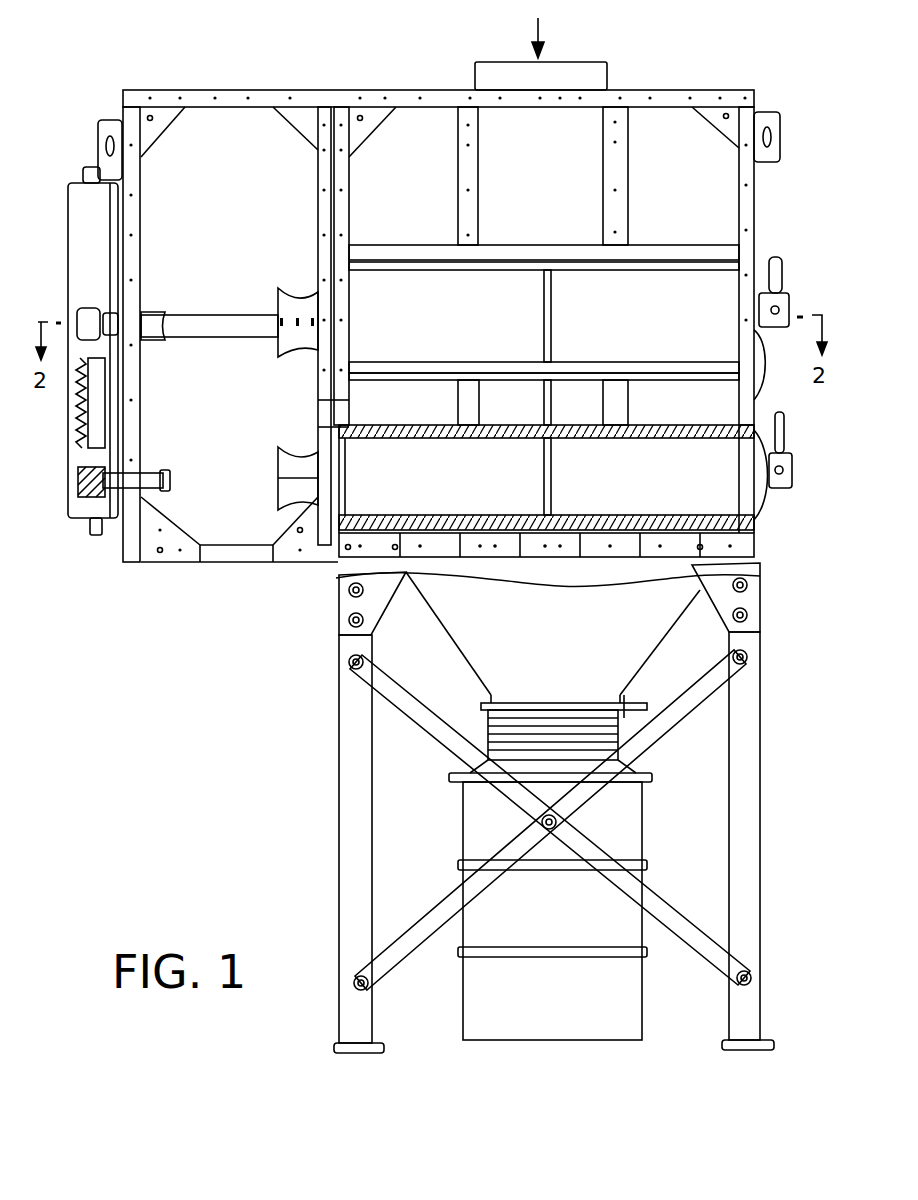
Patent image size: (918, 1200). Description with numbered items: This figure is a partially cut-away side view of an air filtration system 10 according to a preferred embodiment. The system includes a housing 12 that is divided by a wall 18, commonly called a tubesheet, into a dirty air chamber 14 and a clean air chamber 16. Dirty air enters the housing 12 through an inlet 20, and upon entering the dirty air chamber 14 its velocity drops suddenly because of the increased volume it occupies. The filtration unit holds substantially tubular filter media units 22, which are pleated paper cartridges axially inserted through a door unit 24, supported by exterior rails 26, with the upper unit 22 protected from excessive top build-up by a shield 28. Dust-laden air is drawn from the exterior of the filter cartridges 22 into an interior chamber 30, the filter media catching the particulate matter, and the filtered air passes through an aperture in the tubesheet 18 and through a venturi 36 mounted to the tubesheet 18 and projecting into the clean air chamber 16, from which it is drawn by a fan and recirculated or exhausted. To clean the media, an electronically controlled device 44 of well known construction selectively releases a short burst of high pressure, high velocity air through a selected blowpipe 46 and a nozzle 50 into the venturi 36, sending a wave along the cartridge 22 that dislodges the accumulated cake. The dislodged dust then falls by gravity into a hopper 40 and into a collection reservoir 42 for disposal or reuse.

The air filtration system 10 is at (168, 640).
The housing 12 is at (368, 90).
The dirty air chamber 14 is at (415, 150).
The clean air chamber 16 is at (220, 140).
The wall 18 is at (320, 178).
The inlet 20 is at (552, 30).
The filter media units 22 is at (712, 283).
The door unit 24 is at (783, 270).
The exterior rails 26 is at (690, 365).
The shield 28 is at (676, 252).
The interior chamber 30 is at (394, 488).
The venturi 36 is at (318, 290).
The hopper 40 is at (632, 636).
The collection reservoir 42 is at (632, 820).
The electronically controlled device 44 is at (70, 183).
The blowpipe 46 is at (144, 480).
The nozzle 50 is at (148, 318).